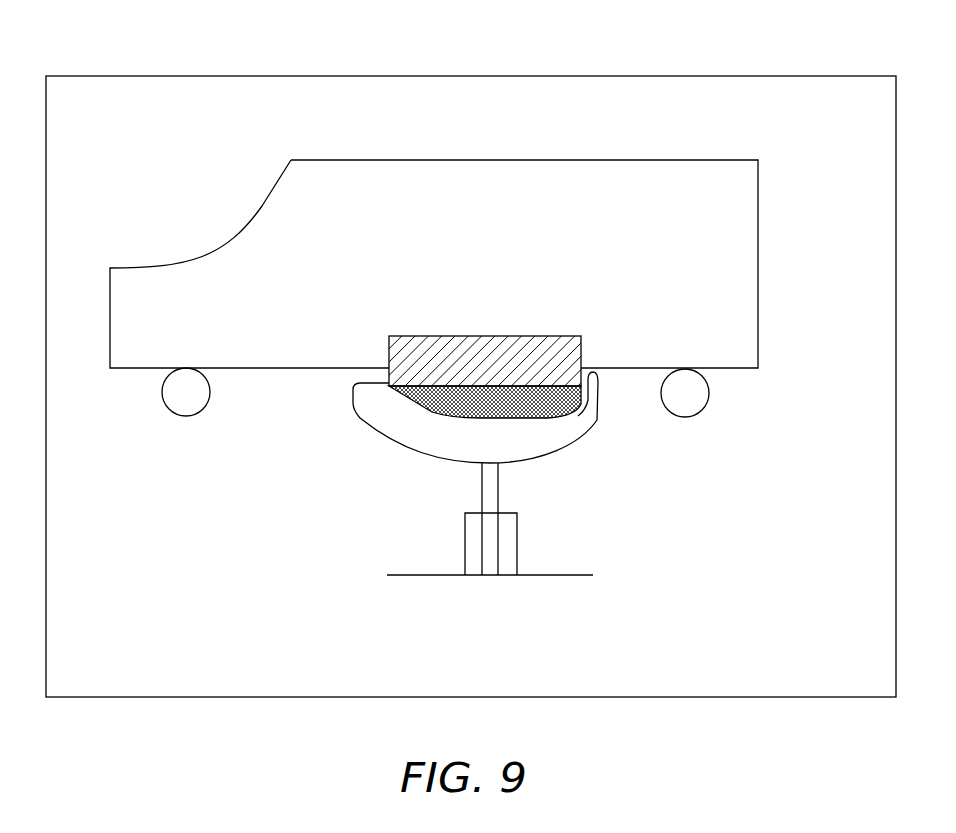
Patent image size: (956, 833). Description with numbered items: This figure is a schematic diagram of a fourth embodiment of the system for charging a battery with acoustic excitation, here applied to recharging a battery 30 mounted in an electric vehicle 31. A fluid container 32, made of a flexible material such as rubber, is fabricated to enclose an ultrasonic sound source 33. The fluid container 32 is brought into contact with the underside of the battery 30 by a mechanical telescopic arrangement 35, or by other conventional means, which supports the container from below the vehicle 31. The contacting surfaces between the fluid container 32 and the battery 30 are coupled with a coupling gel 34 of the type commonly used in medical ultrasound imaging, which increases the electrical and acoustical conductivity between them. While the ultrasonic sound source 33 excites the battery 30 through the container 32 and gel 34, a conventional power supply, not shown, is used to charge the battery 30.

The battery 30 is at (500, 330).
The electric vehicle 31 is at (502, 159).
The fluid container 32 is at (600, 428).
The ultrasonic sound source 33 is at (420, 440).
The coupling gel 34 is at (540, 410).
The mechanical telescopic arrangement 35 is at (465, 545).